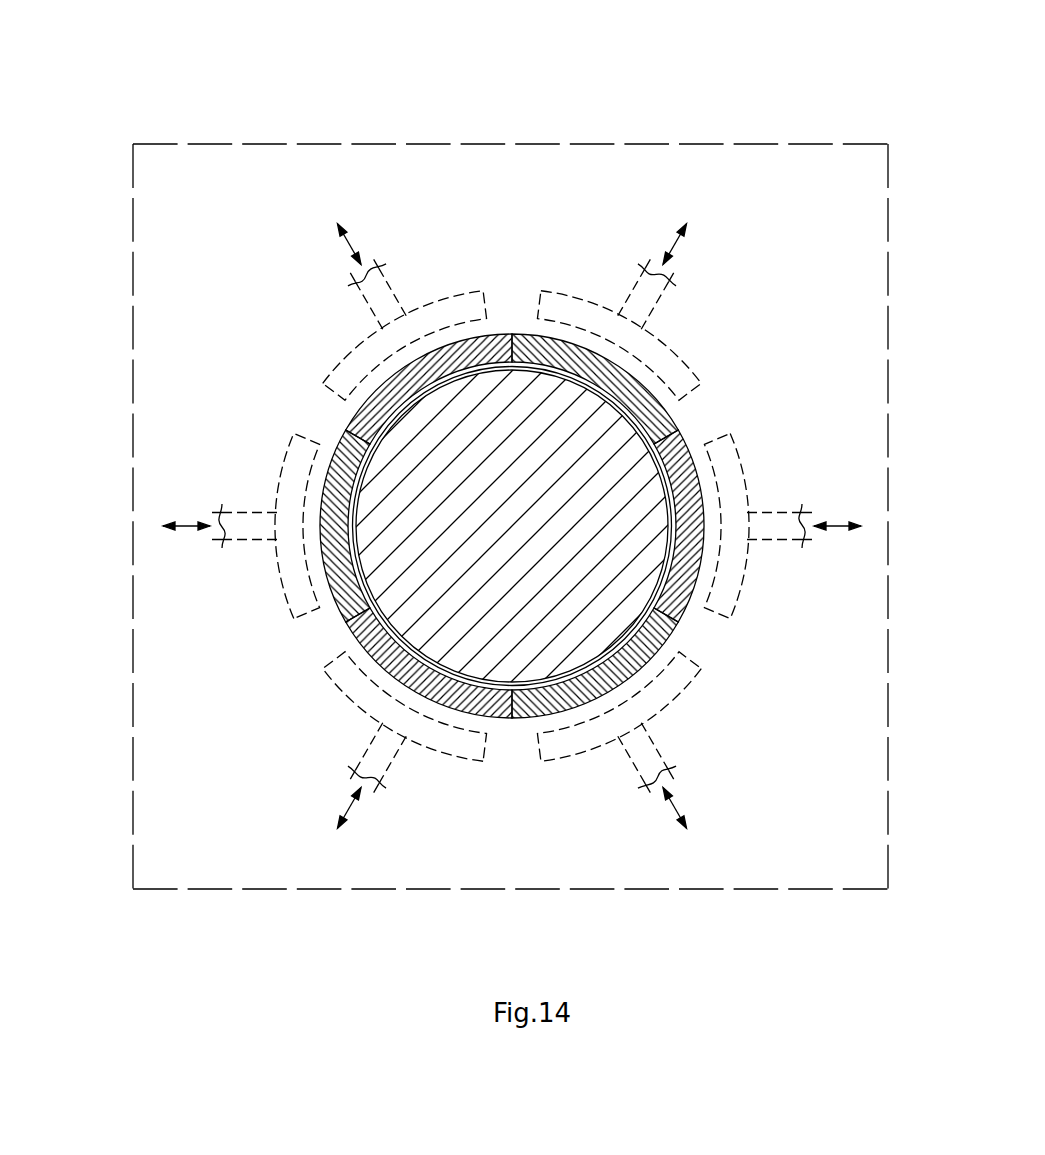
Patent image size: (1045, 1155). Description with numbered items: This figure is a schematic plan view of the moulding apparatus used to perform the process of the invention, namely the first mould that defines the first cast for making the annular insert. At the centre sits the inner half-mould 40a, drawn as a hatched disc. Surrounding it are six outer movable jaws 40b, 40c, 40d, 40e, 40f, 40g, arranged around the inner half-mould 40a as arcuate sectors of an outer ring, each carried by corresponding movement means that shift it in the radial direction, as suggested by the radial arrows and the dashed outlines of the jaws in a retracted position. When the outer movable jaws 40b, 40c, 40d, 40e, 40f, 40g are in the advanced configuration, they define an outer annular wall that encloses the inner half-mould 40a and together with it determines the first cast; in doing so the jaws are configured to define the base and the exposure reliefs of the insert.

The inner half-mould 40a is at (421, 567).
The outer movable jaw 40b is at (388, 652).
The outer movable jaw 40c is at (580, 690).
The outer movable jaw 40d is at (672, 563).
The outer movable jaw 40e is at (612, 377).
The outer movable jaw 40f is at (427, 372).
The outer movable jaw 40g is at (330, 482).